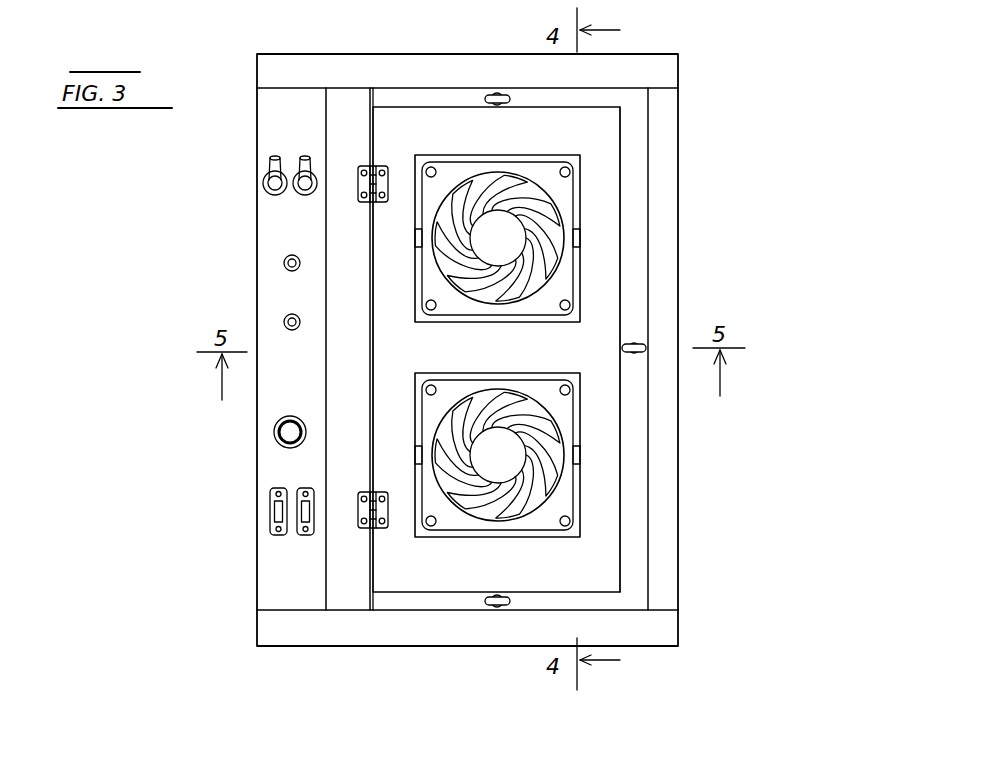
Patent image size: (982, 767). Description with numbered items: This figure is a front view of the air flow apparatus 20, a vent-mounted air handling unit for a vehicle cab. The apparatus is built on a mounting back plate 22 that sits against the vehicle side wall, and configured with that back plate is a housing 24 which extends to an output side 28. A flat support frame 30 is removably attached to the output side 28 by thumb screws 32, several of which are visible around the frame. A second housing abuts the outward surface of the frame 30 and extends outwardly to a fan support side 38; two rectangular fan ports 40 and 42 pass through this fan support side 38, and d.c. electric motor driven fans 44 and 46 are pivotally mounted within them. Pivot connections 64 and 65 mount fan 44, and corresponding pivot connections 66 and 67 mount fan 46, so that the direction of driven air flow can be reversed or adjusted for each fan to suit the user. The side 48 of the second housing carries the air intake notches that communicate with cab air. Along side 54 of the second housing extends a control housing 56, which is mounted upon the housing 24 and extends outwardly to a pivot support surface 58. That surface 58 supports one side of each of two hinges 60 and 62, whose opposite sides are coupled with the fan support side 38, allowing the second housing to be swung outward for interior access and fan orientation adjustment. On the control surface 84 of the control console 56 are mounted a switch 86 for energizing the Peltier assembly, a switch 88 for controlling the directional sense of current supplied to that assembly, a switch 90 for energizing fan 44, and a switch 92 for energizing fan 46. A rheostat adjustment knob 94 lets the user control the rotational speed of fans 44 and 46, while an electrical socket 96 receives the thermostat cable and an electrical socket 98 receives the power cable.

The air flow apparatus 20 is at (782, 110).
The mounting back plate 22 is at (662, 641).
The housing 24 is at (682, 235).
The output side 28 is at (688, 95).
The support frame 30 is at (636, 136).
The thumb screws 32 is at (499, 93).
The fan support side 38 is at (598, 125).
The fan port 40 is at (455, 153).
The fan port 42 is at (456, 538).
The electric motor driven fan 44 is at (506, 202).
The electric motor driven fan 46 is at (548, 466).
The side of second housing 48 is at (622, 192).
The side of housing 54 is at (372, 130).
The control housing 56 is at (255, 252).
The pivot support surface 58 is at (272, 139).
The hinge 60 is at (358, 168).
The hinge 62 is at (366, 532).
The pivot connection 64 is at (415, 241).
The pivot connection 65 is at (580, 241).
The pivot connection 66 is at (415, 458).
The pivot connection 67 is at (580, 458).
The control surface 84 is at (283, 393).
The switch 86 is at (268, 184).
The switch 88 is at (302, 192).
The switch 90 is at (276, 503).
The switch 92 is at (305, 531).
The rheostat adjustment knob 94 is at (290, 438).
The electrical socket 96 is at (284, 267).
The electrical socket 98 is at (284, 321).